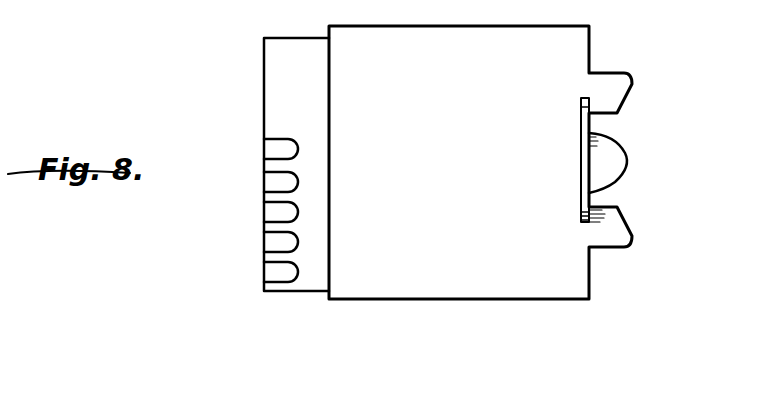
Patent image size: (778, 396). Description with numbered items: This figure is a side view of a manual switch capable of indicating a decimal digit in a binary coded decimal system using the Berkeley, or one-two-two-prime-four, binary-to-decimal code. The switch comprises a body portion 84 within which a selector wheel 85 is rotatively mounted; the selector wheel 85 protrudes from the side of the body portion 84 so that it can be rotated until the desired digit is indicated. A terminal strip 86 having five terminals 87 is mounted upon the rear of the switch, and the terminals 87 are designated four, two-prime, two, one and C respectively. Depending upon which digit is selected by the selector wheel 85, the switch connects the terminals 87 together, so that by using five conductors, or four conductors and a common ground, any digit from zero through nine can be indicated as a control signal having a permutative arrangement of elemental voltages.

The body portion 84 is at (470, 176).
The selector wheel 85 is at (628, 163).
The terminal strip 86 is at (263, 71).
The terminals 87 is at (265, 153).